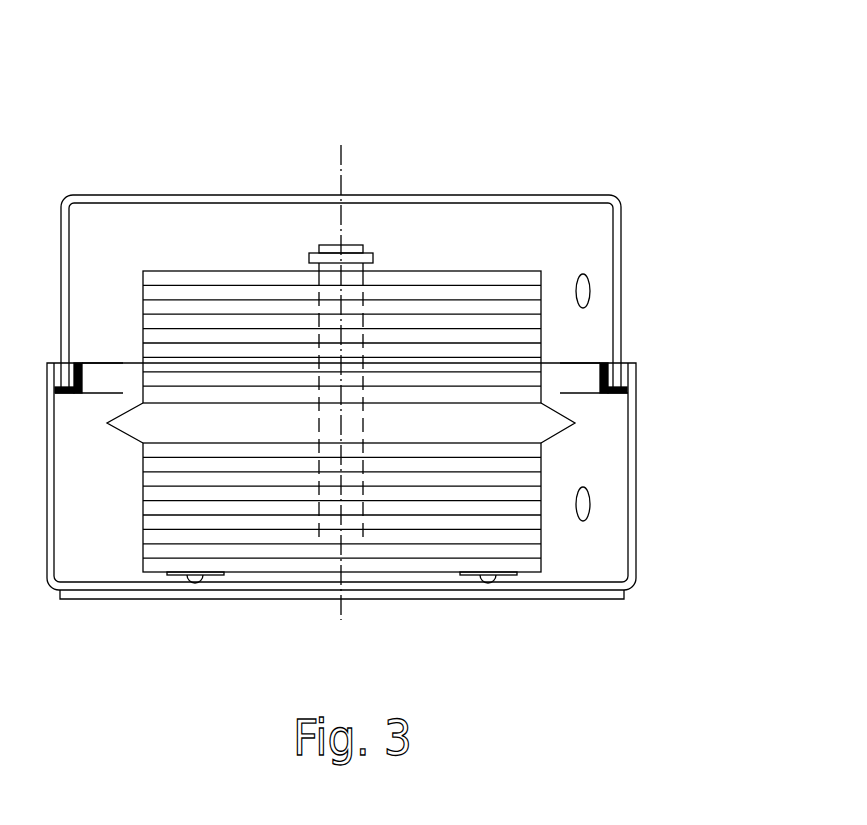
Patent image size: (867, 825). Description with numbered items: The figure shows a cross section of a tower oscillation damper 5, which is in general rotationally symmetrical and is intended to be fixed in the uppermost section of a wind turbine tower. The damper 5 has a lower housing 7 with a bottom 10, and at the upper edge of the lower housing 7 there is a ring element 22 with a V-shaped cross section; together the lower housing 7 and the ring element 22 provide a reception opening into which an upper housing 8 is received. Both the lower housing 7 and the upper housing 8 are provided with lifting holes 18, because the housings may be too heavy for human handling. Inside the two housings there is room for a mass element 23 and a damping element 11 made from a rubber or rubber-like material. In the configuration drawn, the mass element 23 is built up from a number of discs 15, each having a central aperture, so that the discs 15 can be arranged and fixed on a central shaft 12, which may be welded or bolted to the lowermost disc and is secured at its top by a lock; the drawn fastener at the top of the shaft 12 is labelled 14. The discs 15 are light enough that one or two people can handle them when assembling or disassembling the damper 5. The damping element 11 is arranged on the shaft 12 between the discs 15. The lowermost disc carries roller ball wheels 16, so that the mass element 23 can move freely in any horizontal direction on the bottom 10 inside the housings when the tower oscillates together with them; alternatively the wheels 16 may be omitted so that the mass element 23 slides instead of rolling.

The tower oscillation damper 5 is at (398, 342).
The lower housing 7 is at (637, 475).
The upper housing 8 is at (622, 251).
The bottom 10 is at (573, 582).
The damping element 11 is at (593, 418).
The central shaft 12 is at (340, 245).
The nut 14 is at (373, 258).
The discs 15 is at (495, 270).
The roller ball wheels 16 is at (502, 583).
The lifting holes 18 is at (590, 293).
The ring element 22 is at (622, 380).
The mass element 23 is at (423, 386).